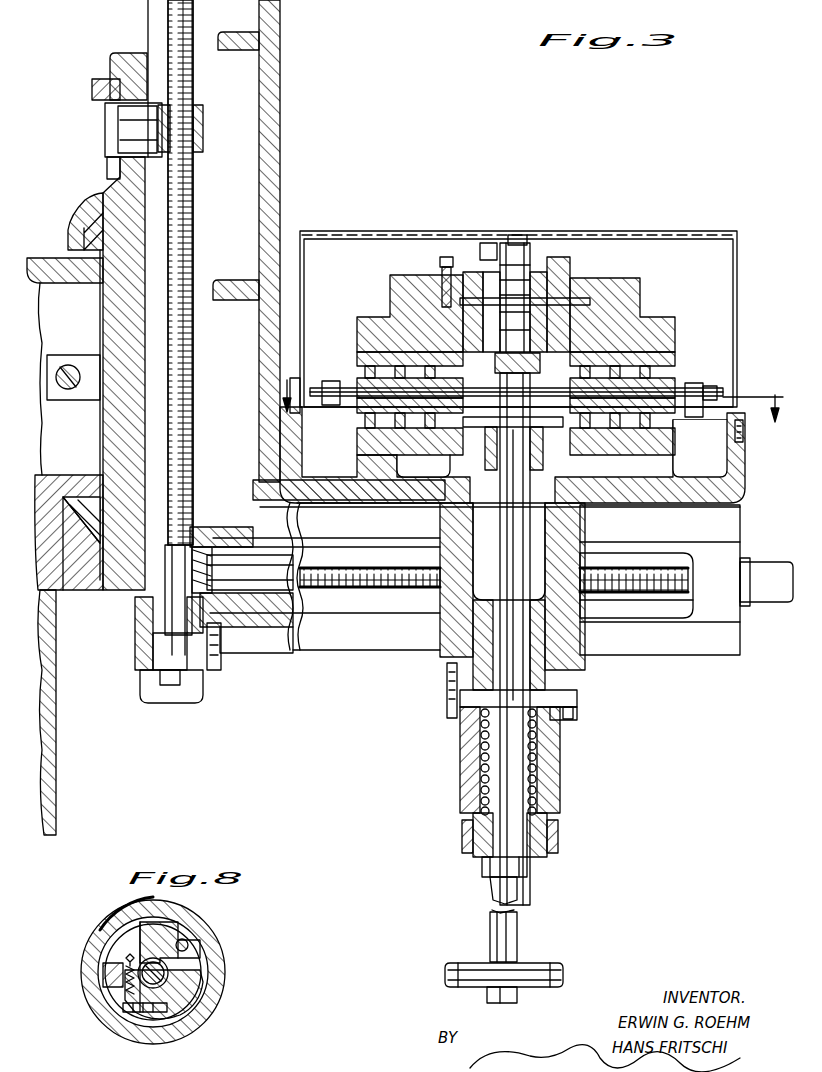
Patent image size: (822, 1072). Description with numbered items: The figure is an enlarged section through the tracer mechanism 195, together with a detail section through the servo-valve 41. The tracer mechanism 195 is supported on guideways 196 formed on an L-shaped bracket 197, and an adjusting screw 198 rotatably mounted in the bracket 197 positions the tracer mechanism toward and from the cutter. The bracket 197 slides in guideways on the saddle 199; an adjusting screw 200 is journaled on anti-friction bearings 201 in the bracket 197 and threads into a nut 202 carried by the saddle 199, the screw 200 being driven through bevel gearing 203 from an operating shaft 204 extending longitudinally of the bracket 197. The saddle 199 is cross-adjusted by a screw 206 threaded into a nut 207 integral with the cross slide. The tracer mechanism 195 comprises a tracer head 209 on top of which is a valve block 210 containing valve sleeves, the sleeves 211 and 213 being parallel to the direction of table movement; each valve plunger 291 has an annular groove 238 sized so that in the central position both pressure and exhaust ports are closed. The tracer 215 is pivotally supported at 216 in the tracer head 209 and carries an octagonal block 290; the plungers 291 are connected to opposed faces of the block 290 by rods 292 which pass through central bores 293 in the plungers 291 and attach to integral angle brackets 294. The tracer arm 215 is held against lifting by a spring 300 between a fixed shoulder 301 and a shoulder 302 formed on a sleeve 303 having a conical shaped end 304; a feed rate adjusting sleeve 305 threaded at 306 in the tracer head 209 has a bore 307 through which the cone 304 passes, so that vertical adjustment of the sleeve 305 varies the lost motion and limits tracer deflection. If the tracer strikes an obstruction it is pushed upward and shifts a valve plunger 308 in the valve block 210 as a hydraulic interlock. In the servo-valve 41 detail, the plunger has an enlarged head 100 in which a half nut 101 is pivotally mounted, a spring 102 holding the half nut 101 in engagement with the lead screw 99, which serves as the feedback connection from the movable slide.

In FIG. 3, the adjusting screw 200 is at (193, 239).
In FIG. 3, the nut 202 is at (203, 143).
In FIG. 3, the saddle 199 is at (98, 204).
In FIG. 3, the screw 206 is at (70, 400).
In FIG. 3, the nut 207 is at (70, 366).
In FIG. 3, the L-shaped bracket 197 is at (280, 146).
In FIG. 3, the tracer mechanism 195 is at (624, 288).
In FIG. 3, the annular groove 238 is at (368, 355).
In FIG. 3, the valve sleeve 213 is at (364, 422).
In FIG. 3, the valve block 210 is at (643, 322).
In FIG. 3, the tracer valve plunger 291 is at (670, 367).
In FIG. 3, the rod 292 is at (677, 384).
In FIG. 3, the central bore 293 is at (646, 432).
In FIG. 3, the clutch plate 211 is at (670, 457).
In FIG. 3, the angle bracket 294 is at (702, 397).
In FIG. 3, the valve plunger 308 is at (547, 387).
In FIG. 3, the octagonal block 290 is at (552, 354).
In FIG. 3, the pivot 216 is at (545, 642).
In FIG. 3, the tracer head 209 is at (585, 673).
In FIG. 3, the fixed shoulder 301 is at (577, 692).
In FIG. 3, the threads 306 is at (560, 735).
In FIG. 3, the spring 300 is at (490, 768).
In FIG. 3, the shoulder 302 is at (543, 826).
In FIG. 3, the sleeve 303 is at (540, 840).
In FIG. 3, the feed rate adjusting sleeve 305 is at (552, 853).
In FIG. 3, the bore 307 is at (462, 848).
In FIG. 3, the conical shaped end 304 is at (478, 868).
In FIG. 3, the tracer 215 is at (506, 940).
In FIG. 3, the guideways 196 is at (701, 657).
In FIG. 3, the adjusting screw 198 is at (654, 600).
In FIG. 3, the operating shaft 204 is at (330, 602).
In FIG. 3, the bevel gearing 203 is at (265, 632).
In FIG. 3, the anti-friction bearings 201 is at (140, 657).
In FIG. 8, the servo-valve 41 is at (222, 950).
In FIG. 8, the enlarged head 100 is at (185, 999).
In FIG. 8, the half nut 101 is at (185, 940).
In FIG. 8, the lead screw 99 is at (168, 972).
In FIG. 8, the spring 102 is at (123, 962).